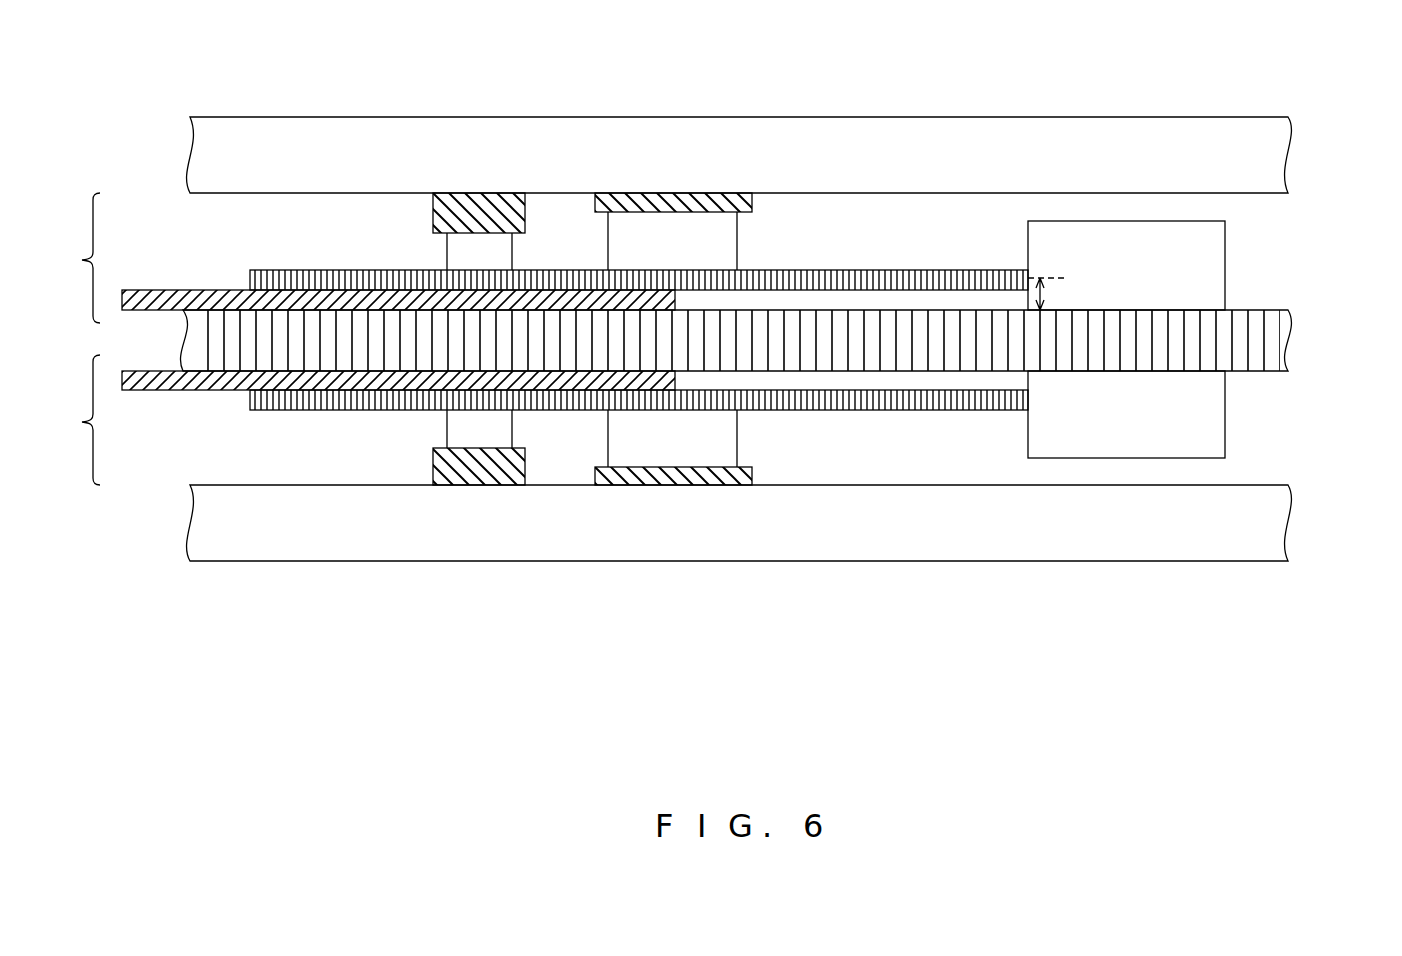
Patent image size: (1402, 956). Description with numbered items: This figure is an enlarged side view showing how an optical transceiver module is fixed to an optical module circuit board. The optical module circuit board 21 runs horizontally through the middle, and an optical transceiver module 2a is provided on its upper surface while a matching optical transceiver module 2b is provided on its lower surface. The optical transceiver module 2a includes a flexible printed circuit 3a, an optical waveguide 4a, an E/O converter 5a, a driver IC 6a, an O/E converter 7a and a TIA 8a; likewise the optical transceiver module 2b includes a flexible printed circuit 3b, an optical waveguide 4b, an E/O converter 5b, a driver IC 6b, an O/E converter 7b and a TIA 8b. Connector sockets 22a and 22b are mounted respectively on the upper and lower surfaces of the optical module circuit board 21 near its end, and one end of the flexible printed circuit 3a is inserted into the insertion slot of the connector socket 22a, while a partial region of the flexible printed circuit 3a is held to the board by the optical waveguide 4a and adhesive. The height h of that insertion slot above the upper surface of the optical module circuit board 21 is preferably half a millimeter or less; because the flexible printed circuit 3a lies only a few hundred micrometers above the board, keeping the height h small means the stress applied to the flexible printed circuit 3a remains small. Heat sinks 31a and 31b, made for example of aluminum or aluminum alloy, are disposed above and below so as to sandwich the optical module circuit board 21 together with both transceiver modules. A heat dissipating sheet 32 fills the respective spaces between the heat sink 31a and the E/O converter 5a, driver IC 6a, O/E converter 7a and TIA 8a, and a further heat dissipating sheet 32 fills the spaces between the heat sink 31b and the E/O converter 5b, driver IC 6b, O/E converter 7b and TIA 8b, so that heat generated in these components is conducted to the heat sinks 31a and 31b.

The optical transceiver module 2a is at (536, 258).
The optical transceiver module 2b is at (535, 420).
The flexible printed circuit 3a is at (624, 249).
The flexible printed circuit 3b is at (623, 431).
The optical waveguide 4a is at (165, 290).
The optical waveguide 4b is at (165, 390).
The E/O converter 5a is at (639, 264).
The E/O converter 5b is at (639, 418).
The driver IC 6a is at (660, 241).
The driver IC 6b is at (661, 438).
The O/E converter 7a is at (447, 255).
The O/E converter 7b is at (447, 430).
The TIA 8a is at (737, 252).
The TIA 8b is at (737, 430).
The optical module circuit board 21 is at (1290, 338).
The connector socket 22a is at (1225, 254).
The connector socket 22b is at (1225, 428).
The heat sink 31a is at (812, 117).
The heat sink 31b is at (806, 561).
The heat dissipating sheet 32 is at (433, 213).
The height h is at (1050, 292).